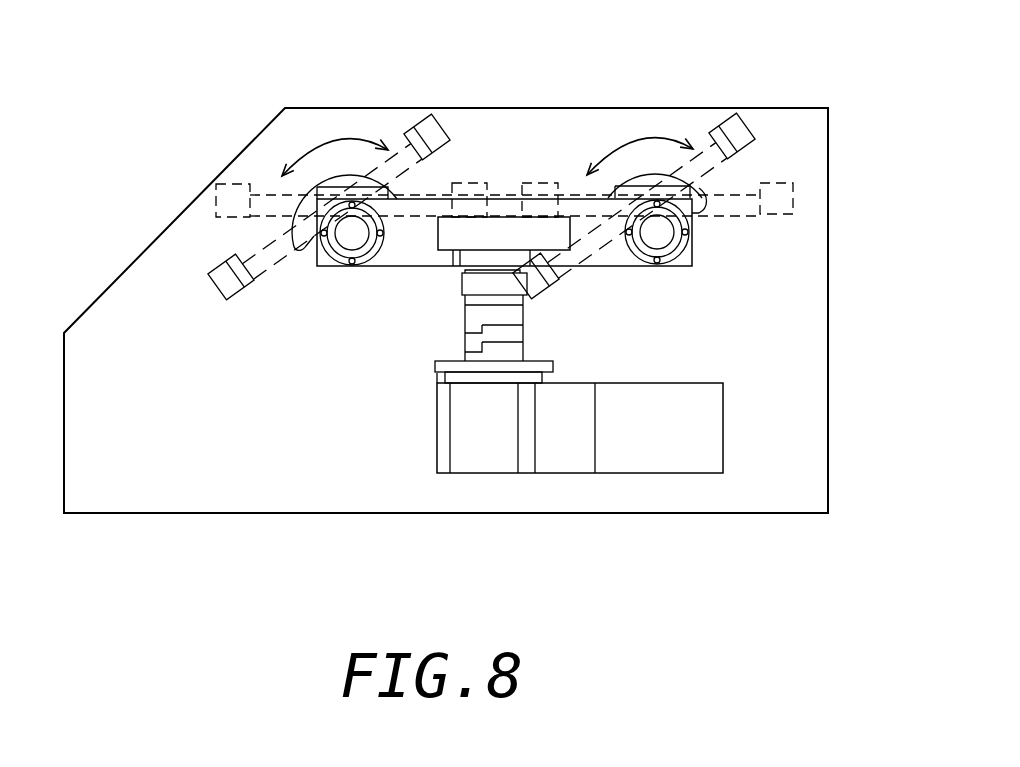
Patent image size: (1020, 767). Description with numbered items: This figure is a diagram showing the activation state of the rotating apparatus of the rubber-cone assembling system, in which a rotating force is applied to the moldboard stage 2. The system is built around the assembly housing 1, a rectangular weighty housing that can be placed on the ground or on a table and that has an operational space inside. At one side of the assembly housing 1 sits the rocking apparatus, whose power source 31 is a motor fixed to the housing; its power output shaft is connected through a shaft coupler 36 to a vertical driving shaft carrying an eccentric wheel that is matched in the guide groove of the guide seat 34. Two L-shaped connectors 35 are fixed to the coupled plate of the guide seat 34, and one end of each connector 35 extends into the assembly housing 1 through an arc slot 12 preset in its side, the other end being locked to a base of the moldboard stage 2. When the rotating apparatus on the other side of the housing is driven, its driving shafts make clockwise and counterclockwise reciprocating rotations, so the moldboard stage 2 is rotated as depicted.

The assembly housing 1 is at (774, 107).
The moldboard stage 2 is at (812, 200).
The arc slot 12 is at (703, 212).
The power source 31 is at (663, 458).
The guide seat 34 is at (513, 223).
The connector 35 is at (703, 197).
The shaft coupler 36 is at (515, 332).